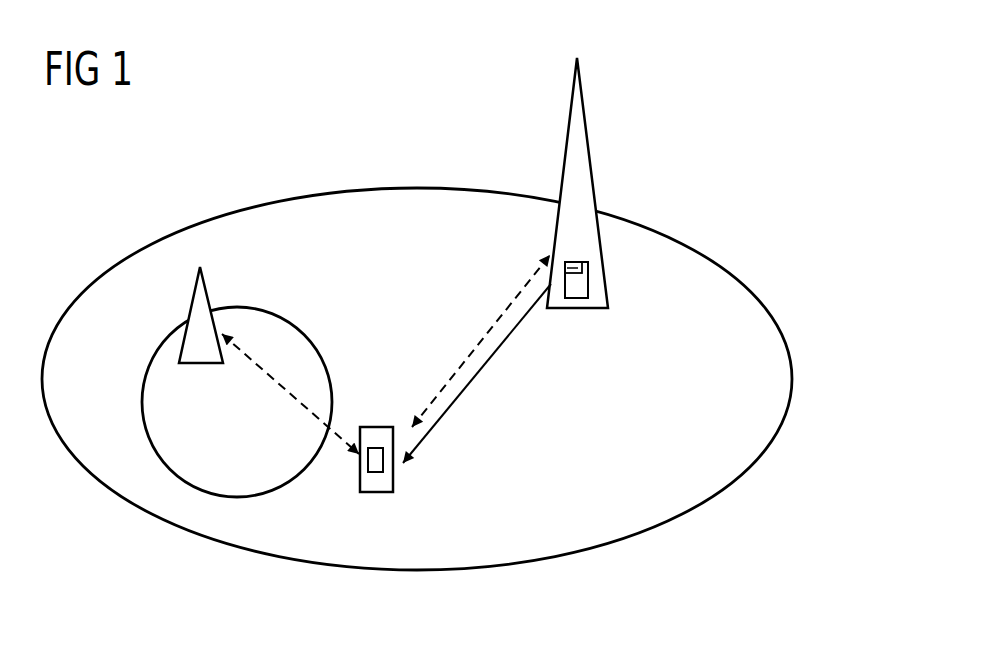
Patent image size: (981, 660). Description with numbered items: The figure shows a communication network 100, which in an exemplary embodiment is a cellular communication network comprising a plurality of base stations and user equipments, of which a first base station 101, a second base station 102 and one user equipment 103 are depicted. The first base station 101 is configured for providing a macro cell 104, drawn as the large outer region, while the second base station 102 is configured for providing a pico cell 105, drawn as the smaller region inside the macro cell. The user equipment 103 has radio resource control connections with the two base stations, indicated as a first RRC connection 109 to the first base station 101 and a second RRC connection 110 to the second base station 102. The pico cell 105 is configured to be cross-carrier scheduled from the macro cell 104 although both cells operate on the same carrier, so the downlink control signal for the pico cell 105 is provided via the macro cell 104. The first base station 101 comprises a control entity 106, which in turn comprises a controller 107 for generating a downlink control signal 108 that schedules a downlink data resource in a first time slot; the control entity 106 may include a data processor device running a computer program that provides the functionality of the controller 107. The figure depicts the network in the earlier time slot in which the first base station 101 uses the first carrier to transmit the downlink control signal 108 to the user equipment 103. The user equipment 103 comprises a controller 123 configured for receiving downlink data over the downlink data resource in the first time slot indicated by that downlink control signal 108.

The communication network 100 is at (730, 130).
The first base station 101 is at (592, 163).
The second base station 102 is at (187, 308).
The user equipment 103 is at (377, 487).
The macro cell 104 is at (415, 186).
The pico cell 105 is at (300, 325).
The control entity 106 is at (575, 292).
The controller 107 is at (583, 268).
The downlink control signal 108 is at (473, 377).
The RRC connection 109 is at (477, 342).
The RRC connection 110 is at (278, 387).
The controller 123 is at (376, 450).